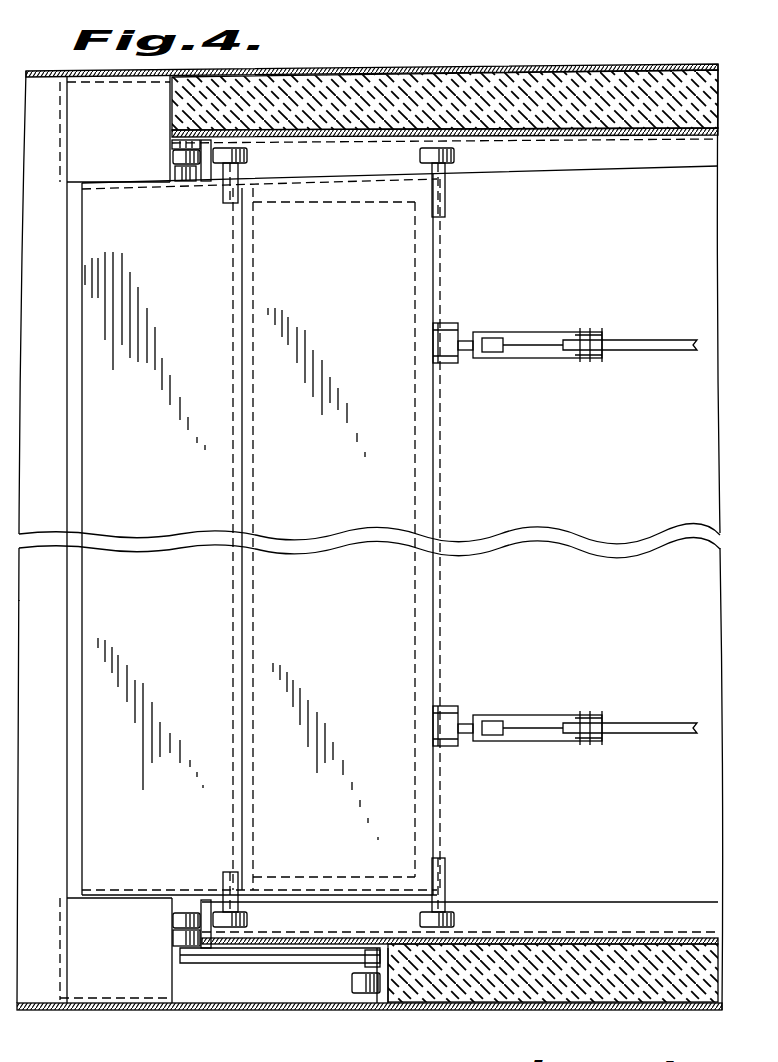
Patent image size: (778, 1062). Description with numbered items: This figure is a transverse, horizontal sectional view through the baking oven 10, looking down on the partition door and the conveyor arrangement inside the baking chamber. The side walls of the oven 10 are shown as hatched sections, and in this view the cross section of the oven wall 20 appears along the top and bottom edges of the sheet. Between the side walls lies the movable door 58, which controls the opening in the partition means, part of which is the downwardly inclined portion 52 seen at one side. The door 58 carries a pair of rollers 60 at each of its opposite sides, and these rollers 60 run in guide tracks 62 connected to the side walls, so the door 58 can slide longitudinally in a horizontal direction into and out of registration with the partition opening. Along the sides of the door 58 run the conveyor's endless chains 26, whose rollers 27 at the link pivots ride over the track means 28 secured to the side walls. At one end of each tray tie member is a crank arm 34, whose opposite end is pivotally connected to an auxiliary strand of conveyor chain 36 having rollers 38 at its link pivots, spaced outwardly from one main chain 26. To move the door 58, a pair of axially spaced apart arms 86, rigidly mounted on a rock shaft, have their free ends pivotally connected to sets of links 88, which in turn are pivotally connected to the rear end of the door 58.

The baking oven 10 is at (598, 1010).
The insulated wall 20 is at (622, 872).
The endless chains 26 is at (172, 143).
The rollers 27 is at (172, 157).
The track means 28 is at (212, 180).
The crank arm 34 is at (291, 960).
The auxiliary strand of conveyor chain 36 is at (380, 1008).
The rollers 38 is at (350, 985).
The downwardly inclined portion 52 is at (60, 648).
The movable door 58 is at (353, 613).
The rollers 60 is at (250, 156).
The guide tracks 62 is at (546, 170).
The arms 86 is at (647, 350).
The links 88 is at (542, 360).